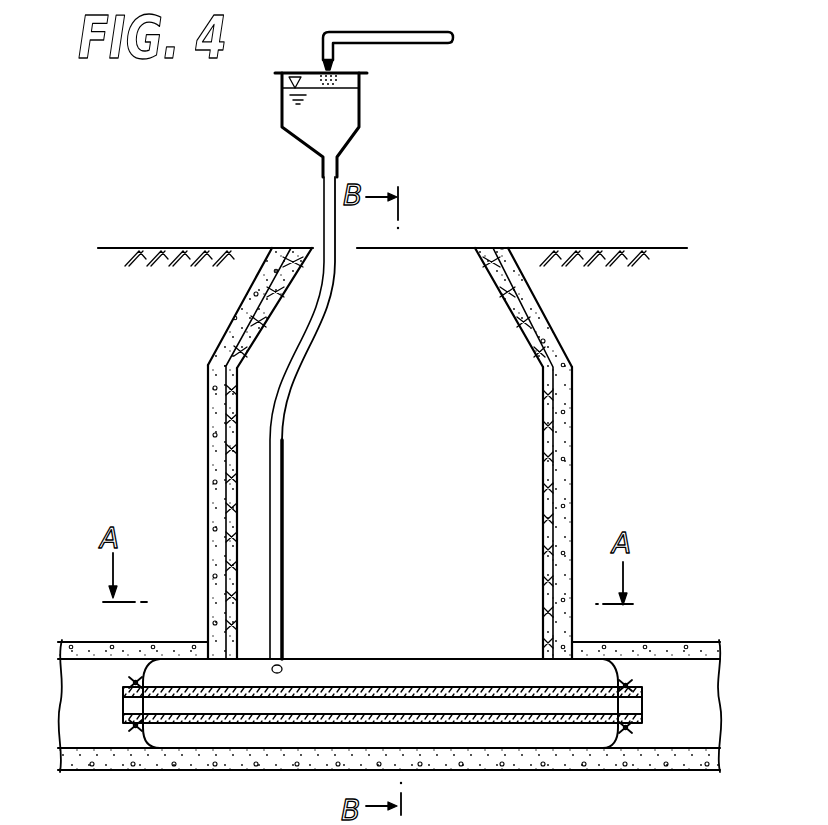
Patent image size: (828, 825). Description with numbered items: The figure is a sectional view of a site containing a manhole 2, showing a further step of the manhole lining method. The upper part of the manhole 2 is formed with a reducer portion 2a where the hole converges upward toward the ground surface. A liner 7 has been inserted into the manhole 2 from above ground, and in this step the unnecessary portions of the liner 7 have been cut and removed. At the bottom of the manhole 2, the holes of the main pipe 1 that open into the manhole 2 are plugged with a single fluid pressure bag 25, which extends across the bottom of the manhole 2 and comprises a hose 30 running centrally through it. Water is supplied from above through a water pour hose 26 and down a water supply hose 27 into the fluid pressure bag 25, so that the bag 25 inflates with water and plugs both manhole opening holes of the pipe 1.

The main pipe 1 is at (650, 773).
The manhole 2 is at (572, 443).
The reducer portion 2a is at (548, 318).
The liner 7 is at (547, 493).
The fluid pressure bag 25 is at (427, 655).
The water pour hose 26 is at (403, 37).
The water supply hose 27 is at (283, 567).
The hose 30 is at (497, 712).